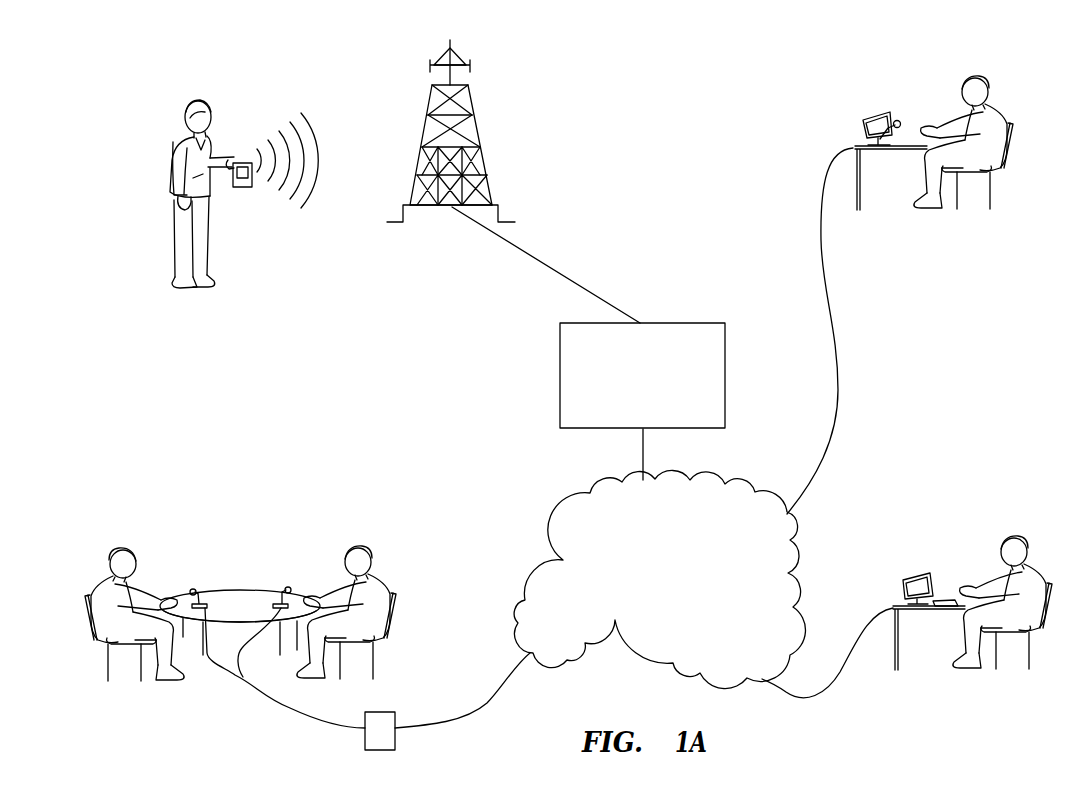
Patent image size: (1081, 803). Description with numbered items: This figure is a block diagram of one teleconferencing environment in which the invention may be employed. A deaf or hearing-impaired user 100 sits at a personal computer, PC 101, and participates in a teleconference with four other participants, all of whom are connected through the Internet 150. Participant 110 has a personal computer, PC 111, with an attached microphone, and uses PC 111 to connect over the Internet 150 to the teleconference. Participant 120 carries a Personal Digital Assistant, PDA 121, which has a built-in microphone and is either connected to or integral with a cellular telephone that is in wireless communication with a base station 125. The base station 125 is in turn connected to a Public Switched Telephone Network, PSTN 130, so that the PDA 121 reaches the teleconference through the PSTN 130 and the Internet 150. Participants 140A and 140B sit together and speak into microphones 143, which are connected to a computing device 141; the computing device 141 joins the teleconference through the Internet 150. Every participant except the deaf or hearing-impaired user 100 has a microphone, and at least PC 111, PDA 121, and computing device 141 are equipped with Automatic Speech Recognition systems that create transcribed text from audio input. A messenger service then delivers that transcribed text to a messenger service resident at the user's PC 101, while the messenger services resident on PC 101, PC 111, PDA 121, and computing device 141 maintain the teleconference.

The deaf or hearing-impaired user 100 is at (1021, 538).
The PC 101 is at (920, 573).
The participant 110 is at (980, 78).
The PC 111 is at (880, 113).
The participant 120 is at (190, 289).
The PDA 121 is at (240, 162).
The base station 125 is at (480, 131).
The PSTN 130 is at (686, 320).
The participant 140A is at (121, 550).
The participant 140B is at (357, 548).
The computing device 141 is at (370, 740).
The microphones 143 is at (198, 588).
The Internet 150 is at (526, 594).